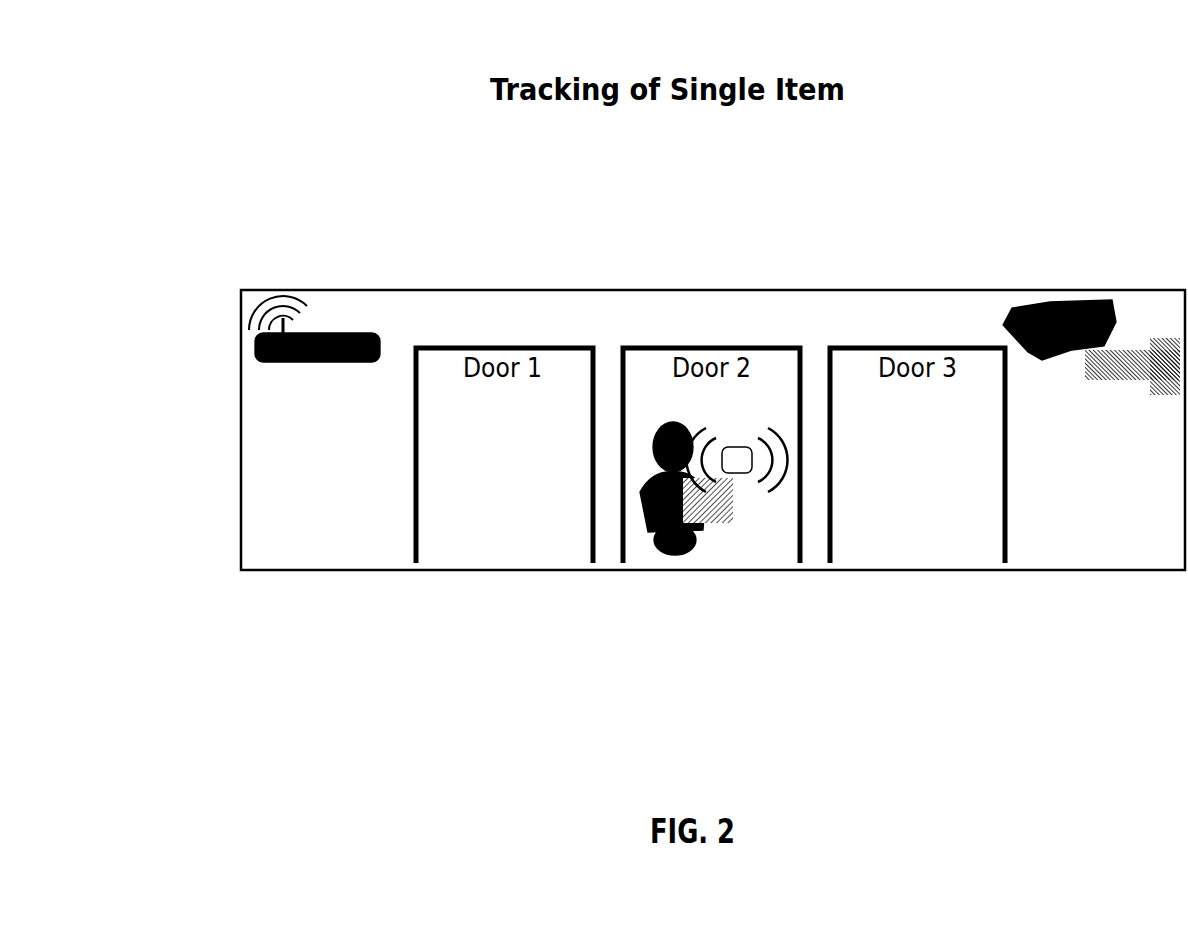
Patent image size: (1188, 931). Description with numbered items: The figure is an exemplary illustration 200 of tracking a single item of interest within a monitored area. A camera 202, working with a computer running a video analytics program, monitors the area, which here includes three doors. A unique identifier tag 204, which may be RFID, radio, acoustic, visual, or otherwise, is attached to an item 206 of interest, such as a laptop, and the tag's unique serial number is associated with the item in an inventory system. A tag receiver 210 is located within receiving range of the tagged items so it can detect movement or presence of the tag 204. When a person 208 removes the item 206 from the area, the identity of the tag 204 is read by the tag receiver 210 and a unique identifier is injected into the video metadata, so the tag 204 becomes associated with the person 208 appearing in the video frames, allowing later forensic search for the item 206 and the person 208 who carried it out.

The exemplary illustration 200 is at (172, 62).
The camera 202 is at (1163, 396).
The unique identifier tag 204 is at (730, 440).
The item 206 is at (712, 503).
The person 208 is at (652, 427).
The tag receiver 210 is at (332, 392).